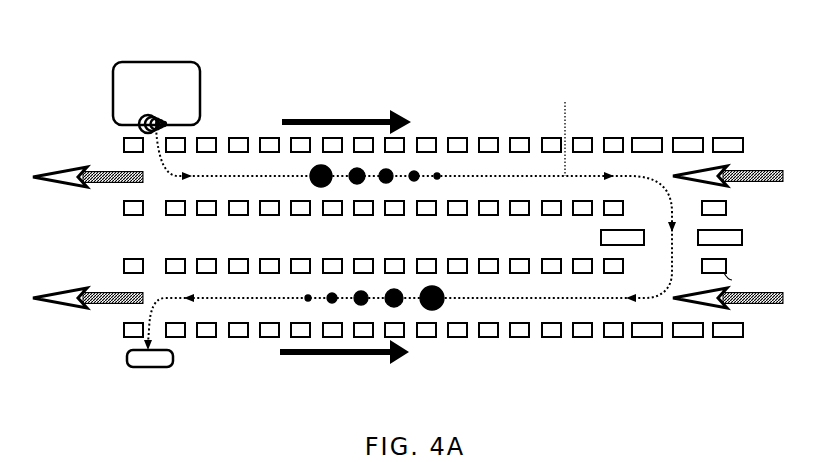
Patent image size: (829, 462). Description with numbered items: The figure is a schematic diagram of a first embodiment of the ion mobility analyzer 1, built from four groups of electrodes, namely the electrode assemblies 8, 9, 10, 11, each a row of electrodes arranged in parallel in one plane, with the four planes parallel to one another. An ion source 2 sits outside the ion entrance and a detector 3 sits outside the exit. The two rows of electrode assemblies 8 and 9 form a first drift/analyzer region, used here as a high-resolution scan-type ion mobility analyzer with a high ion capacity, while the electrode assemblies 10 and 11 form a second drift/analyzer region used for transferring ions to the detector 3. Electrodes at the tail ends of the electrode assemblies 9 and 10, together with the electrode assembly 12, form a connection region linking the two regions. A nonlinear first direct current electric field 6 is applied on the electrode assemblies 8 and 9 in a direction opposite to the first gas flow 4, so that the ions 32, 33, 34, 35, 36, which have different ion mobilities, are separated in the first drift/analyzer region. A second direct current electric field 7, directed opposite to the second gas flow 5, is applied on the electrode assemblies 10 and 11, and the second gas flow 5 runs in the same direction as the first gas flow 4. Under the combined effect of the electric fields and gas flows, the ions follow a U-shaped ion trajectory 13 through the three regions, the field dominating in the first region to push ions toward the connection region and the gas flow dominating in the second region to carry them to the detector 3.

The ion mobility analyzer 1 is at (433, 173).
The ion source 2 is at (156, 82).
The detector 3 is at (150, 371).
The first gas flow 4 is at (739, 176).
The second gas flow 5 is at (739, 298).
The first direct current electric field 6 is at (346, 111).
The second direct current electric field 7 is at (344, 364).
The electrode assembly 8 is at (425, 145).
The electrode assembly 9 is at (417, 208).
The electrode assembly 10 is at (413, 265).
The electrode assembly 11 is at (420, 330).
The electrode assembly 12 is at (734, 239).
The U-shaped ion trajectory 13 is at (564, 128).
The ion 32 is at (147, 122).
The ion 33 is at (348, 186).
The ion 34 is at (393, 170).
The ion 35 is at (420, 171).
The ion 36 is at (442, 175).